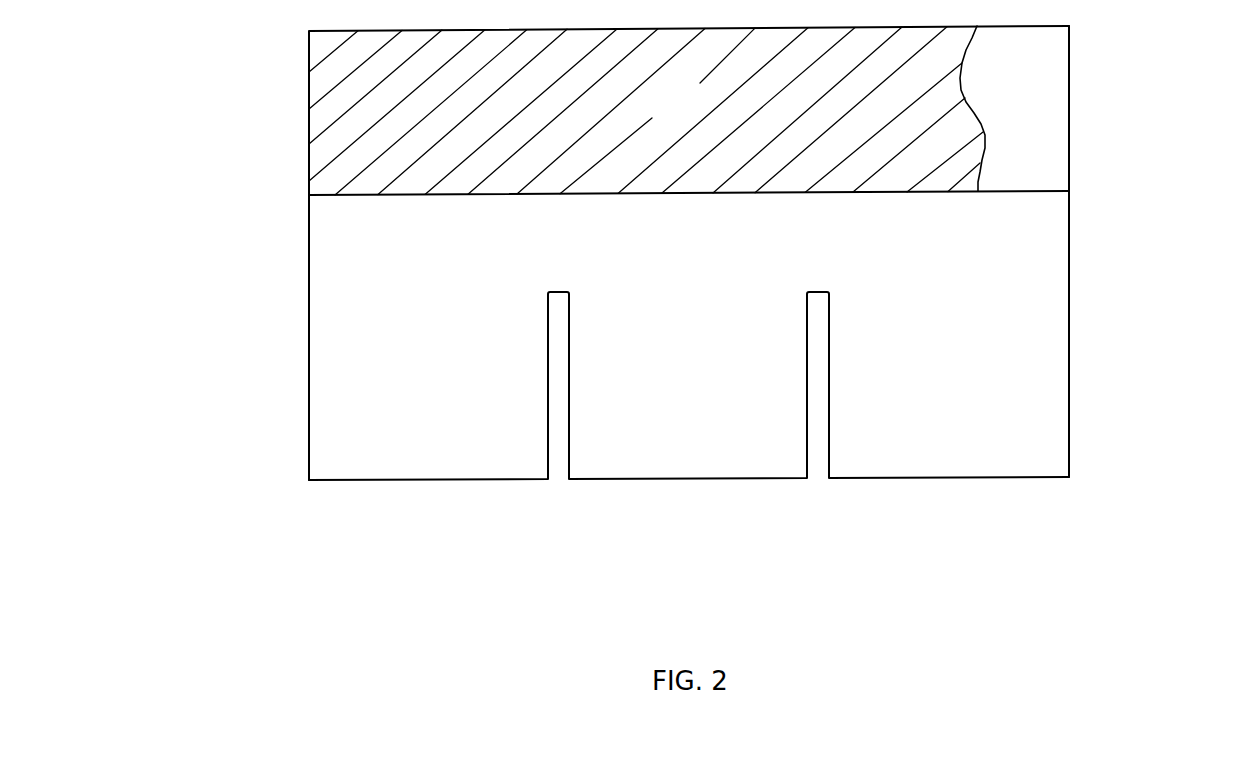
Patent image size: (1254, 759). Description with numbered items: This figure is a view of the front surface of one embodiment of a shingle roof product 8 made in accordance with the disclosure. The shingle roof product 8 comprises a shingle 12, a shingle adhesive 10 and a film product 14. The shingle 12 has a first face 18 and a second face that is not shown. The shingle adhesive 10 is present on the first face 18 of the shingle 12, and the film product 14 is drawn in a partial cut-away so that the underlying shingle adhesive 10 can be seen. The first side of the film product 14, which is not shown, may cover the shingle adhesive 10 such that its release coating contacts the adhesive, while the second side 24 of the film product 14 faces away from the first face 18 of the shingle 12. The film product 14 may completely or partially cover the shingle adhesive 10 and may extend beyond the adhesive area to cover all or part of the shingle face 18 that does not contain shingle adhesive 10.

The shingle roof product 8 is at (706, 332).
The shingle adhesive 10 is at (1035, 110).
The shingle 12 is at (771, 335).
The film product 14 is at (367, 160).
The first face 18 is at (698, 283).
The second side 24 is at (623, 110).